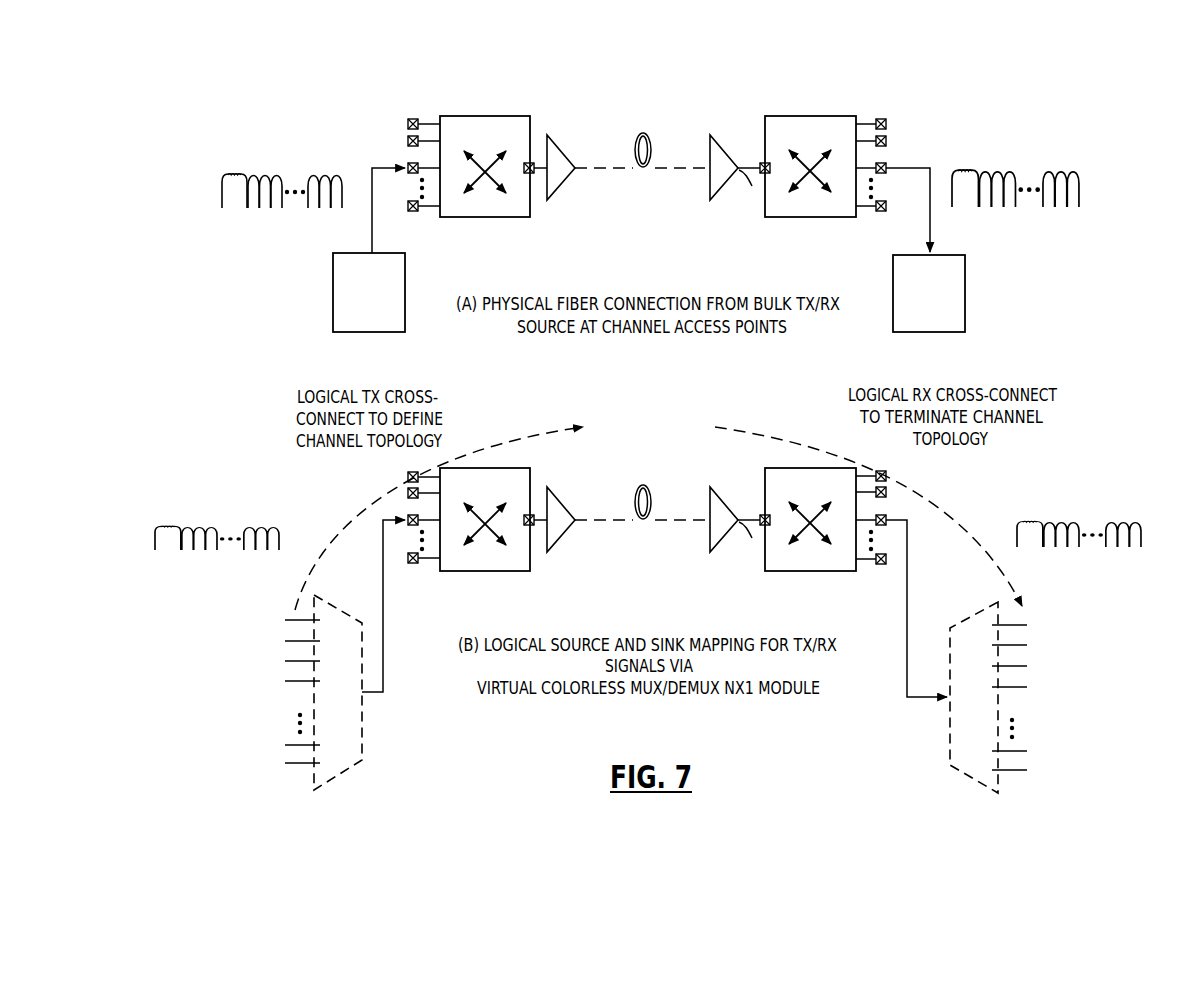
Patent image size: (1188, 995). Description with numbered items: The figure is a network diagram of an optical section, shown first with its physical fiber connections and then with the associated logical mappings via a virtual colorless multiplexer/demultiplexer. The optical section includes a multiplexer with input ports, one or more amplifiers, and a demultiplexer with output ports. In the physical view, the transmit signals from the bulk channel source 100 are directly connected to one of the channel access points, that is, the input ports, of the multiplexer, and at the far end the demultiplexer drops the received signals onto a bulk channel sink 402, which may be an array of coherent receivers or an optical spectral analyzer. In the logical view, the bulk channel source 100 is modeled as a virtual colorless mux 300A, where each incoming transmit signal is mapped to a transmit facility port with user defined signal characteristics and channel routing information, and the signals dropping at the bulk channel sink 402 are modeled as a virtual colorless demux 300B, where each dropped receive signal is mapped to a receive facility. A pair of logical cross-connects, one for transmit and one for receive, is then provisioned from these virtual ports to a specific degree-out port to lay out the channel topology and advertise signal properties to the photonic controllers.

The bulk channel source 100 is at (333, 312).
The bulk channel sink 402 is at (893, 313).
The virtual colorless MUX/DEMUX Nx1 module (TX side) 300A is at (384, 727).
The vCCMDN demux 300B is at (936, 725).